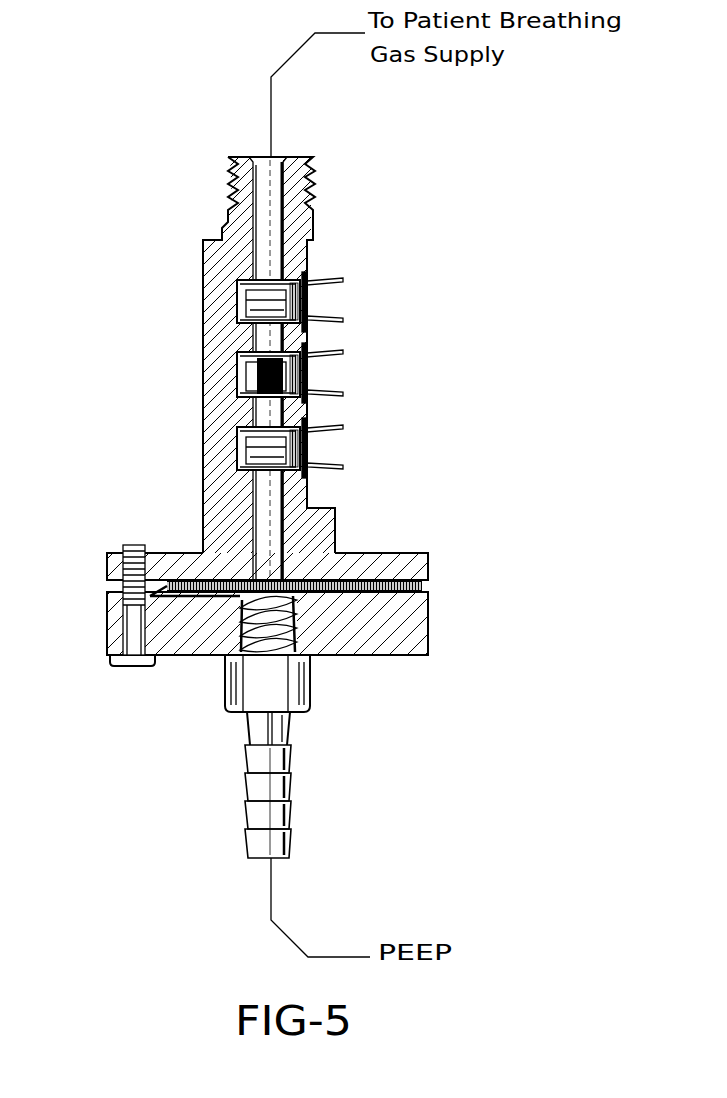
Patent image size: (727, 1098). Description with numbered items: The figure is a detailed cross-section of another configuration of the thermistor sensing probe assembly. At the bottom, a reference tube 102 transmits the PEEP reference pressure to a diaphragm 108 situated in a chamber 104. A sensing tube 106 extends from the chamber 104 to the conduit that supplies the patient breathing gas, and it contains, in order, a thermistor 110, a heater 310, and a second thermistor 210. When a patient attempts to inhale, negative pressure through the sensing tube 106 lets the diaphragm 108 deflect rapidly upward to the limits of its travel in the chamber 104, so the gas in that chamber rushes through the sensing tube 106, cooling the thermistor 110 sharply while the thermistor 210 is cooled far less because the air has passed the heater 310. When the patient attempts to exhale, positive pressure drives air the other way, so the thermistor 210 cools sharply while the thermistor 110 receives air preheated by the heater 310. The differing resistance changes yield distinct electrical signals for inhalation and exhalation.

The reference tube 102 is at (290, 760).
The chamber 104 is at (365, 552).
The sensing tube 106 is at (267, 502).
The diaphragm 108 is at (350, 597).
The thermistor 110 is at (250, 438).
The thermistor 210 is at (240, 289).
The heater 310 is at (256, 358).